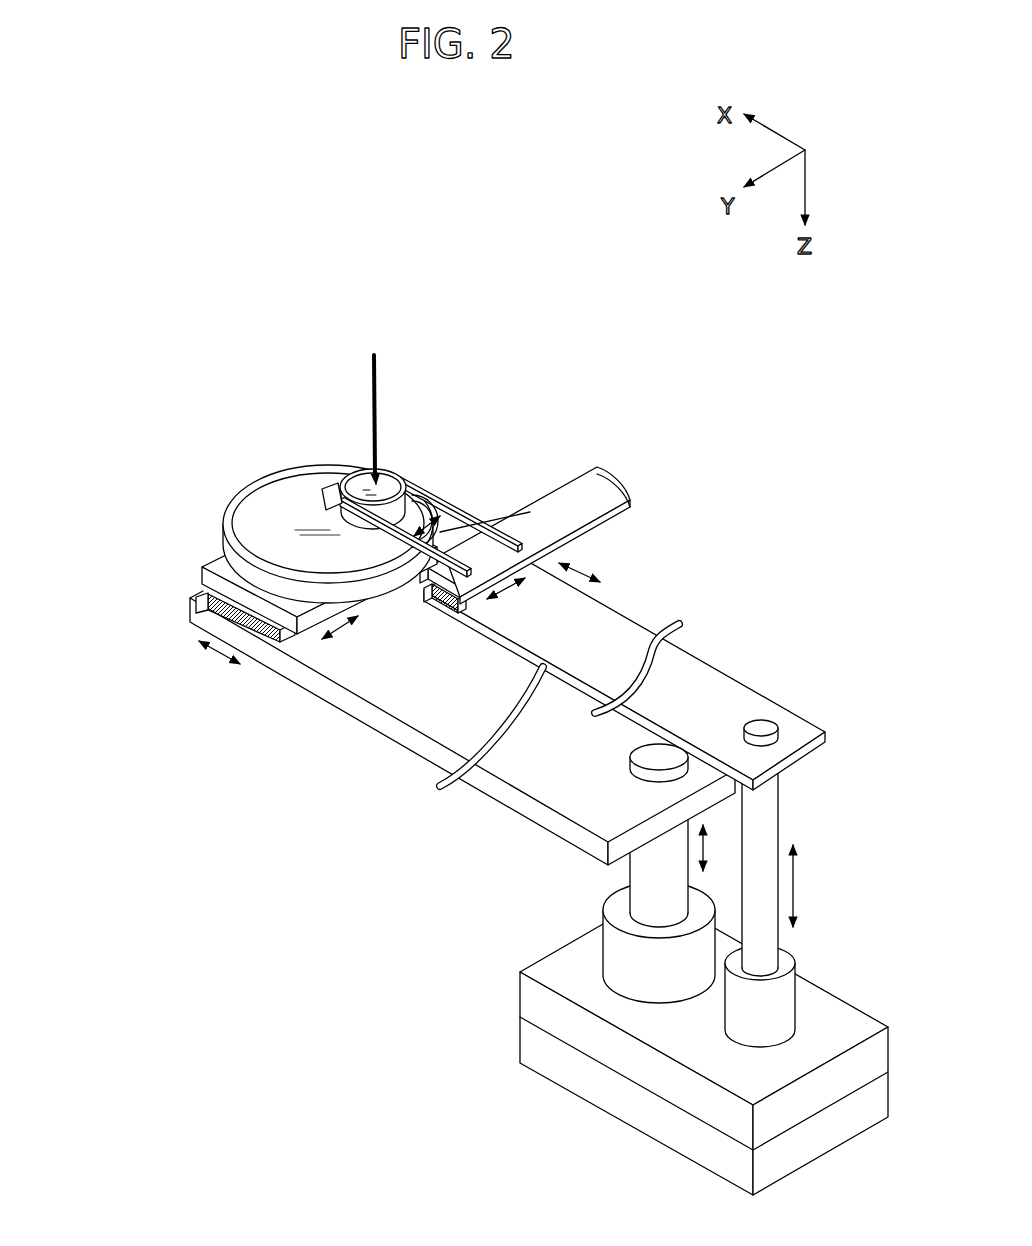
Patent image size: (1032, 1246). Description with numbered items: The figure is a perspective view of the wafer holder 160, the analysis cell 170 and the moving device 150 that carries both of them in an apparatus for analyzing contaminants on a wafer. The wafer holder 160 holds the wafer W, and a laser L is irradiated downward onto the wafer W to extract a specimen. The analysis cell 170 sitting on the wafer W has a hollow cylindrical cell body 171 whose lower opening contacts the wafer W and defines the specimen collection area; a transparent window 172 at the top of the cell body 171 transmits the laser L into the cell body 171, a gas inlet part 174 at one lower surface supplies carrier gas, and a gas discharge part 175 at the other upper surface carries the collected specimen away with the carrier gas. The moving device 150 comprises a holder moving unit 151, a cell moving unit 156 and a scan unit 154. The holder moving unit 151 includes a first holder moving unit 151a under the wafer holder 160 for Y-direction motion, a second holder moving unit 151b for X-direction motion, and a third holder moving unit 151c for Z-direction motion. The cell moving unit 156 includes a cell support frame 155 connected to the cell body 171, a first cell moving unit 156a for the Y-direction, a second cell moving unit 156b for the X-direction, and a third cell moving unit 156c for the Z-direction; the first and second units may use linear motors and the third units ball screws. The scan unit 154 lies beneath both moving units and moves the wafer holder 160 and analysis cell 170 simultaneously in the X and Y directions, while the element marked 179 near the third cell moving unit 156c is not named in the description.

The moving device 150 is at (469, 762).
The holder moving unit 151 is at (469, 786).
The first holder moving unit 151a is at (211, 612).
The second holder moving unit 151b is at (290, 682).
The third holder moving unit 151c is at (598, 947).
The scan unit 154 is at (576, 1042).
The cell support frame 155 is at (612, 532).
The cell moving unit 156 is at (512, 624).
The first cell moving unit 156a is at (473, 606).
The second cell moving unit 156b is at (456, 614).
The third cell moving unit 156c is at (804, 965).
The wafer holder 160 is at (233, 562).
The analysis cell 170 is at (372, 468).
The cell body 171 is at (330, 500).
The window 172 is at (360, 471).
The gas inlet part 174 is at (316, 489).
The gas discharge part 175 is at (414, 473).
The cylinder 179 is at (797, 1000).
The wafer W is at (262, 507).
The laser L is at (377, 387).